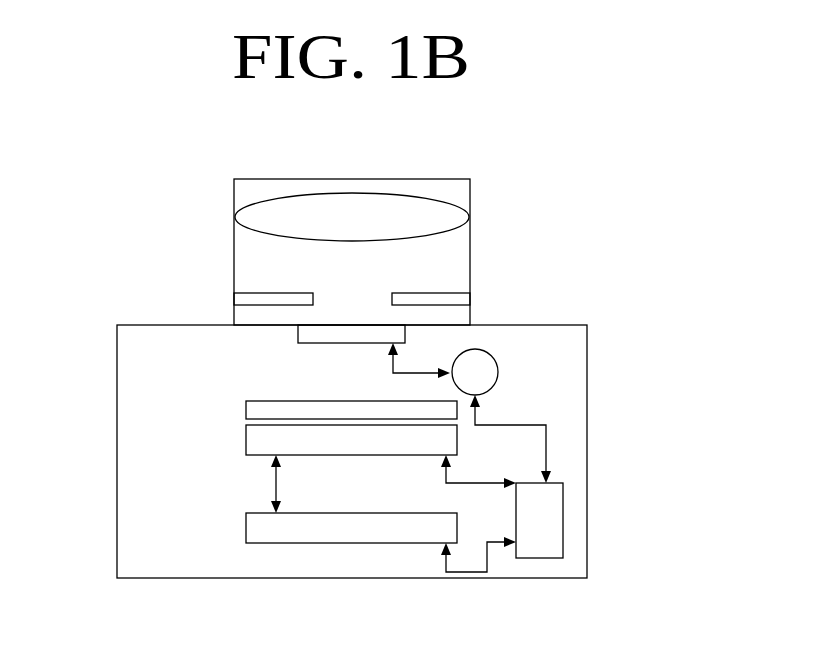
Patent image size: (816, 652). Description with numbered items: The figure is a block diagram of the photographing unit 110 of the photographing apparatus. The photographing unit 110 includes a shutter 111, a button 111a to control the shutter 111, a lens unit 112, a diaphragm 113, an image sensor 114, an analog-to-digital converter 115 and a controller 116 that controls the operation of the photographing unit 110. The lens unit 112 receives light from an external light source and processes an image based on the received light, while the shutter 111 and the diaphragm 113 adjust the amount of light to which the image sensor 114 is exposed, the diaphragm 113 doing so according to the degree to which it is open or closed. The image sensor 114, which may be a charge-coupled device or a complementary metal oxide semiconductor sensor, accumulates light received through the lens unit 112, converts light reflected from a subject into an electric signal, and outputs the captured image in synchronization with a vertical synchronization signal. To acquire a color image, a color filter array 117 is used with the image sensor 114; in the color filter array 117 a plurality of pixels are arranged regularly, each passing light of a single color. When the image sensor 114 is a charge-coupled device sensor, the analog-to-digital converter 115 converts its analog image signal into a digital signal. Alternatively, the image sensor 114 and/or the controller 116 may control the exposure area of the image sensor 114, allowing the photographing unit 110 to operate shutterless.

The photographing unit 110 is at (565, 176).
The shutter 111 is at (400, 333).
The button 111a is at (492, 373).
The lens unit 112 is at (457, 217).
The diaphragm 113 is at (240, 300).
The image sensor 114 is at (450, 442).
The analog-to-digital converter 115 is at (400, 533).
The controller 116 is at (557, 498).
The color filter array 117 is at (254, 412).